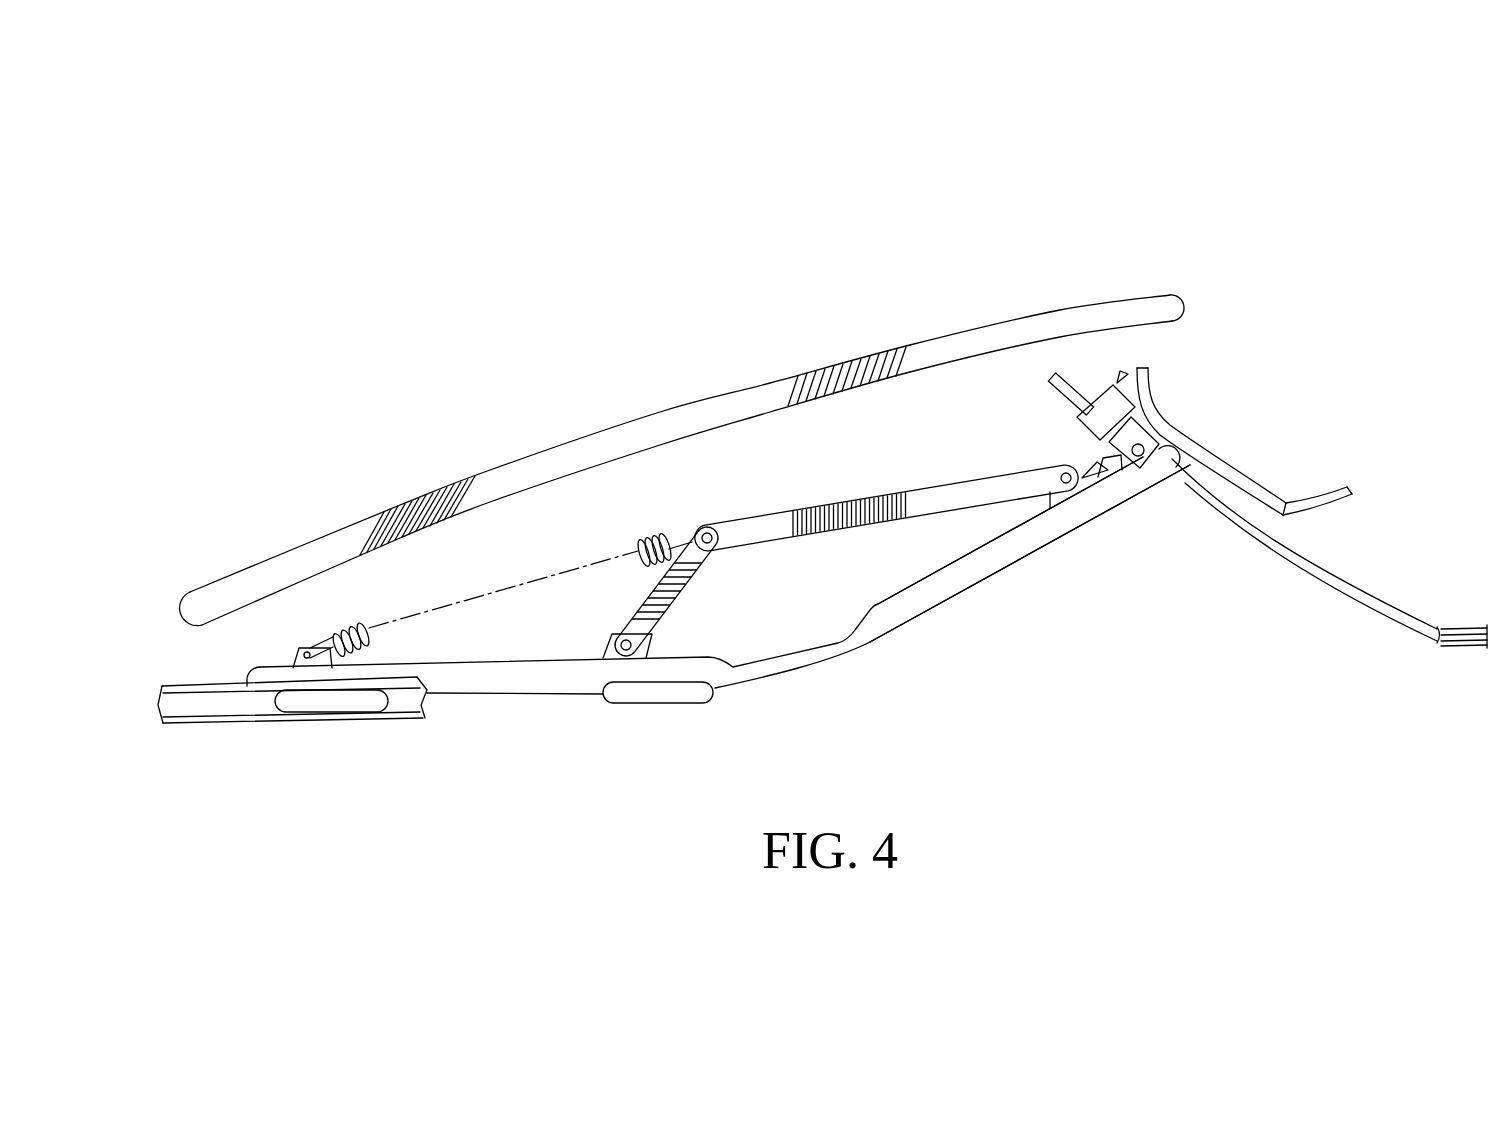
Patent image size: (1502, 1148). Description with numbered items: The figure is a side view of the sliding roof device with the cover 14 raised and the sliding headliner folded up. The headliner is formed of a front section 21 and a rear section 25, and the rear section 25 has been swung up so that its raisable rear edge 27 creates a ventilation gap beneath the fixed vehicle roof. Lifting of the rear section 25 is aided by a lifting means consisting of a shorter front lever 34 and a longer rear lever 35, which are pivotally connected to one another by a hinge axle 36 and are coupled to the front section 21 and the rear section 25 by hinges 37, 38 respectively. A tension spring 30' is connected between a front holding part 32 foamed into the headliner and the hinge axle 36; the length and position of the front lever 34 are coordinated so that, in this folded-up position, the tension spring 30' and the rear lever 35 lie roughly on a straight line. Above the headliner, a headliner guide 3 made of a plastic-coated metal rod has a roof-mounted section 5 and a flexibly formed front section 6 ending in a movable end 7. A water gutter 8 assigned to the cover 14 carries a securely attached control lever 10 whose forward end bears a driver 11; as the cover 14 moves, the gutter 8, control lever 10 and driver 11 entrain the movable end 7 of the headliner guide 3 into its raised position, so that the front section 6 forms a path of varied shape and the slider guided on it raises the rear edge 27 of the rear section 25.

The headliner guide 3 is at (1363, 618).
The roof-mounted section 5 is at (1455, 648).
The front section 6 is at (1288, 573).
The movable end 7 is at (1066, 388).
The water gutter 8 is at (1283, 497).
The control lever 10 is at (1117, 383).
The driver 11 is at (1100, 413).
The cover 14 is at (908, 357).
The front section 21 is at (533, 678).
The rear section 25 is at (992, 565).
The rear edge 27 is at (1139, 483).
The tension spring 30' is at (503, 490).
The front holding part 32 is at (302, 660).
The front lever 34 is at (672, 593).
The rear lever 35 is at (919, 503).
The hinge axle 36 is at (703, 523).
The hinge 37 is at (628, 651).
The hinge 38 is at (1071, 481).